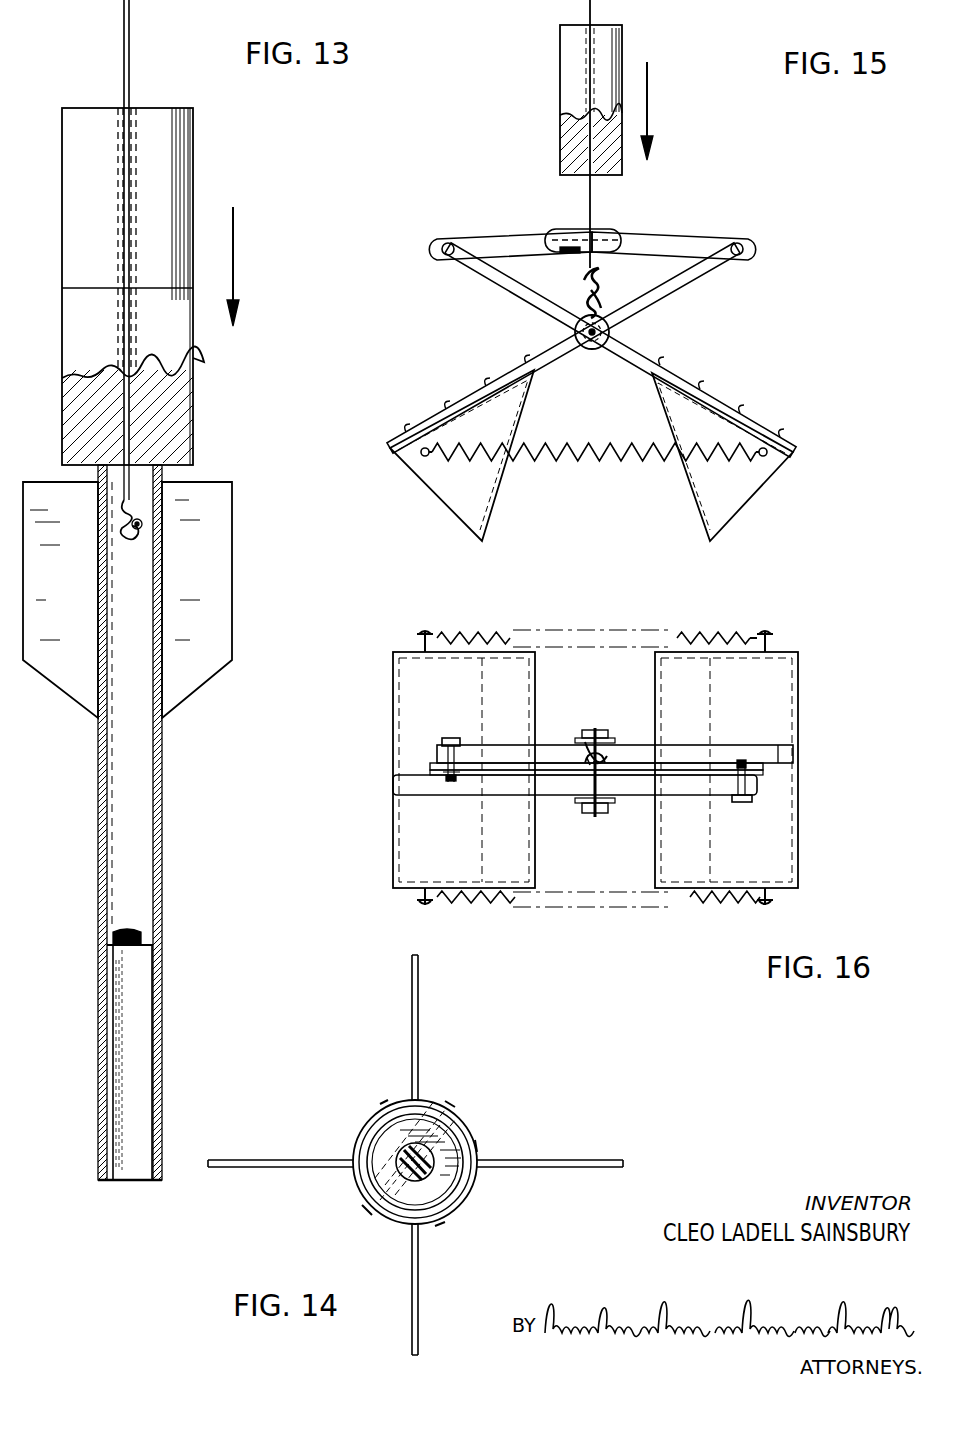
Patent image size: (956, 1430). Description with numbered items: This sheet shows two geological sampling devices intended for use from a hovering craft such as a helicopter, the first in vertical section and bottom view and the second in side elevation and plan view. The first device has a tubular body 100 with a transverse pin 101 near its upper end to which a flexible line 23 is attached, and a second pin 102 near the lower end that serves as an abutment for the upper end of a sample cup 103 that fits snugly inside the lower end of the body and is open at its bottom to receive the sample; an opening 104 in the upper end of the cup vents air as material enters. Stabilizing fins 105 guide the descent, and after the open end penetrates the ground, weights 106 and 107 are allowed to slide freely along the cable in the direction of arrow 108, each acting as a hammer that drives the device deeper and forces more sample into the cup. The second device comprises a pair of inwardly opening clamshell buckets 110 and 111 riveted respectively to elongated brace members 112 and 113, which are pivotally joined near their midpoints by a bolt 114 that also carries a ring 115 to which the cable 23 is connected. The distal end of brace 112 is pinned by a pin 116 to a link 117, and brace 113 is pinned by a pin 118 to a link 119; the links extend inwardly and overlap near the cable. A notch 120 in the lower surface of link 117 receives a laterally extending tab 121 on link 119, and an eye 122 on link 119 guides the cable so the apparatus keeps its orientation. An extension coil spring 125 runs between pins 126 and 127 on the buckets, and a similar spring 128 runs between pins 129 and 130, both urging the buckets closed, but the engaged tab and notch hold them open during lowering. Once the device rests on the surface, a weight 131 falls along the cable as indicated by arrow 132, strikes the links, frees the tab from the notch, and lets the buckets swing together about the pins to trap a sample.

In FIG. 13, the flexible line 23 is at (122, 52).
In FIG. 15, the flexible line 23 is at (592, 203).
In FIG. 16, the flexible line 23 is at (588, 760).
In FIG. 13, the tubular body 100 is at (163, 795).
In FIG. 14, the tubular body 100 is at (462, 1189).
In FIG. 13, the transverse pin 101 is at (142, 528).
In FIG. 14, the transverse pin 101 is at (455, 1118).
In FIG. 13, the second pin 102 is at (124, 932).
In FIG. 14, the second pin 102 is at (428, 1098).
In FIG. 13, the sample cup 103 is at (152, 1170).
In FIG. 14, the sample cup 103 is at (377, 1134).
In FIG. 13, the opening 104 is at (140, 955).
In FIG. 14, the opening 104 is at (410, 1180).
In FIG. 13, the stabilizing fins 105 is at (215, 627).
In FIG. 14, the stabilizing fins 105 is at (410, 1037).
In FIG. 13, the weight 106 is at (175, 426).
In FIG. 13, the weight 107 is at (170, 172).
In FIG. 13, the arrow 108 is at (233, 232).
In FIG. 15, the clamshell bucket 110 is at (480, 510).
In FIG. 16, the clamshell bucket 110 is at (515, 678).
In FIG. 15, the clamshell bucket 111 is at (712, 505).
In FIG. 16, the clamshell bucket 111 is at (676, 671).
In FIG. 15, the brace member 112 is at (487, 382).
In FIG. 16, the brace member 112 is at (500, 797).
In FIG. 15, the brace member 113 is at (690, 385).
In FIG. 16, the brace member 113 is at (712, 748).
In FIG. 15, the bolt 114 is at (610, 330).
In FIG. 16, the bolt 114 is at (597, 725).
In FIG. 15, the ring 115 is at (604, 305).
In FIG. 16, the ring 115 is at (606, 740).
In FIG. 15, the pin 116 is at (742, 243).
In FIG. 16, the pin 116 is at (740, 802).
In FIG. 15, the link 117 is at (673, 245).
In FIG. 16, the link 117 is at (675, 773).
In FIG. 15, the pin 118 is at (448, 244).
In FIG. 16, the pin 118 is at (452, 738).
In FIG. 15, the link 119 is at (498, 225).
In FIG. 16, the link 119 is at (500, 742).
In FIG. 15, the notch 120 is at (564, 252).
In FIG. 15, the tab 121 is at (569, 255).
In FIG. 16, the eye 122 is at (612, 760).
In FIG. 15, the extension coil spring 125 is at (574, 440).
In FIG. 16, the extension coil spring 125 is at (500, 905).
In FIG. 15, the pin 126 is at (421, 451).
In FIG. 16, the pin 126 is at (428, 906).
In FIG. 15, the pin 127 is at (767, 448).
In FIG. 16, the pin 127 is at (770, 903).
In FIG. 16, the extension coil spring 128 is at (684, 636).
In FIG. 16, the pin 129 is at (426, 632).
In FIG. 16, the pin 130 is at (767, 630).
In FIG. 15, the weight 131 is at (565, 91).
In FIG. 15, the arrow 132 is at (647, 105).